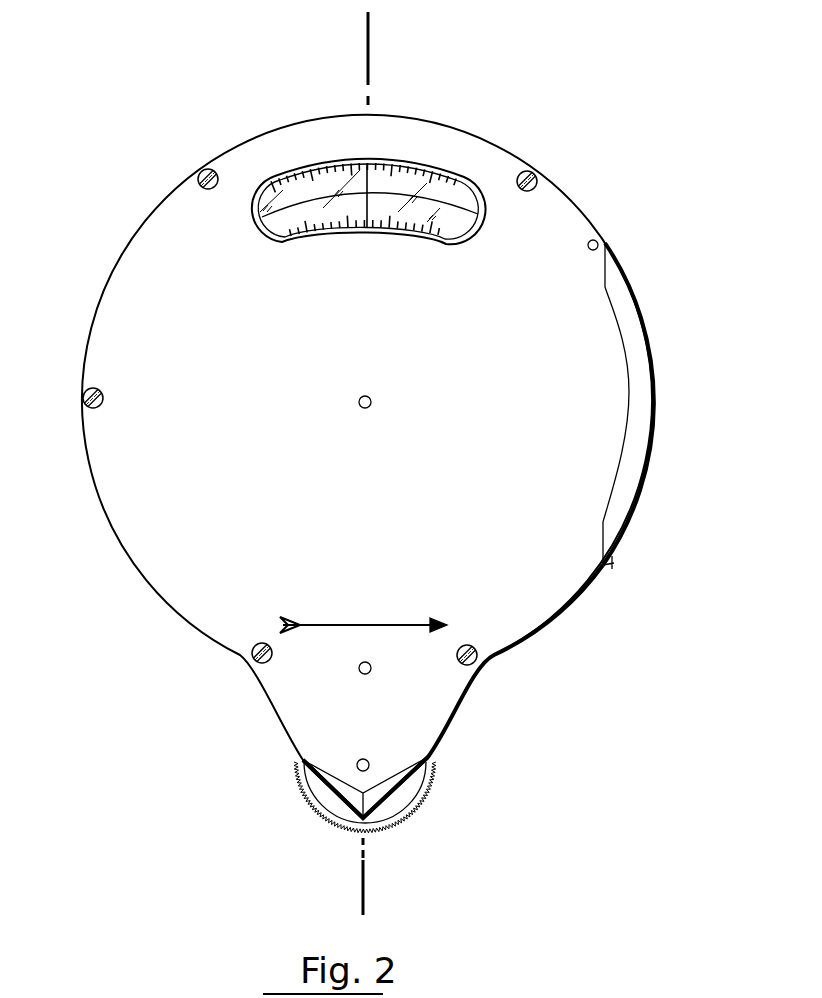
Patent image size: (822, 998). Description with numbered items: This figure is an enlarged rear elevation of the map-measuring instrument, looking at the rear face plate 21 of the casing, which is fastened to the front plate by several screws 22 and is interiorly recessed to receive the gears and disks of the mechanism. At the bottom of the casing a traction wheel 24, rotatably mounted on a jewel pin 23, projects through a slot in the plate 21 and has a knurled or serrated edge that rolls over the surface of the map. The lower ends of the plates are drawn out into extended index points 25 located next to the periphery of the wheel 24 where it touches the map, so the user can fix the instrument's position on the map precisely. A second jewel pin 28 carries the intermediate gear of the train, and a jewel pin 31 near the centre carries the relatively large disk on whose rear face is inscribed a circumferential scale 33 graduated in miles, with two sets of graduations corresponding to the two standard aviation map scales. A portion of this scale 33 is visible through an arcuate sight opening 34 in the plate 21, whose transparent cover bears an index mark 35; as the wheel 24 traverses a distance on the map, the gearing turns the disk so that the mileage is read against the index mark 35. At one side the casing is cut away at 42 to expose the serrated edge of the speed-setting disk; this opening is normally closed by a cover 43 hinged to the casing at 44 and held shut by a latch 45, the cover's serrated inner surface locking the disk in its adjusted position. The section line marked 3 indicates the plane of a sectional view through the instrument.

The section line 3- 3 is at (360, 57).
The rear face plate 21 is at (542, 578).
The screws 22 is at (538, 174).
The jewel pin 23 is at (367, 758).
The traction wheel 24 is at (410, 785).
The index points 25 is at (377, 827).
The jewel pin 28 is at (358, 668).
The jewel pin 31 is at (372, 400).
The circumferential scale 33 is at (440, 205).
The arcuate sight opening 34 is at (450, 172).
The index mark 35 is at (377, 165).
The cut-away opening 42 is at (630, 392).
The cover 43 is at (647, 337).
The hinge 44 is at (610, 240).
The latch 45 is at (614, 562).